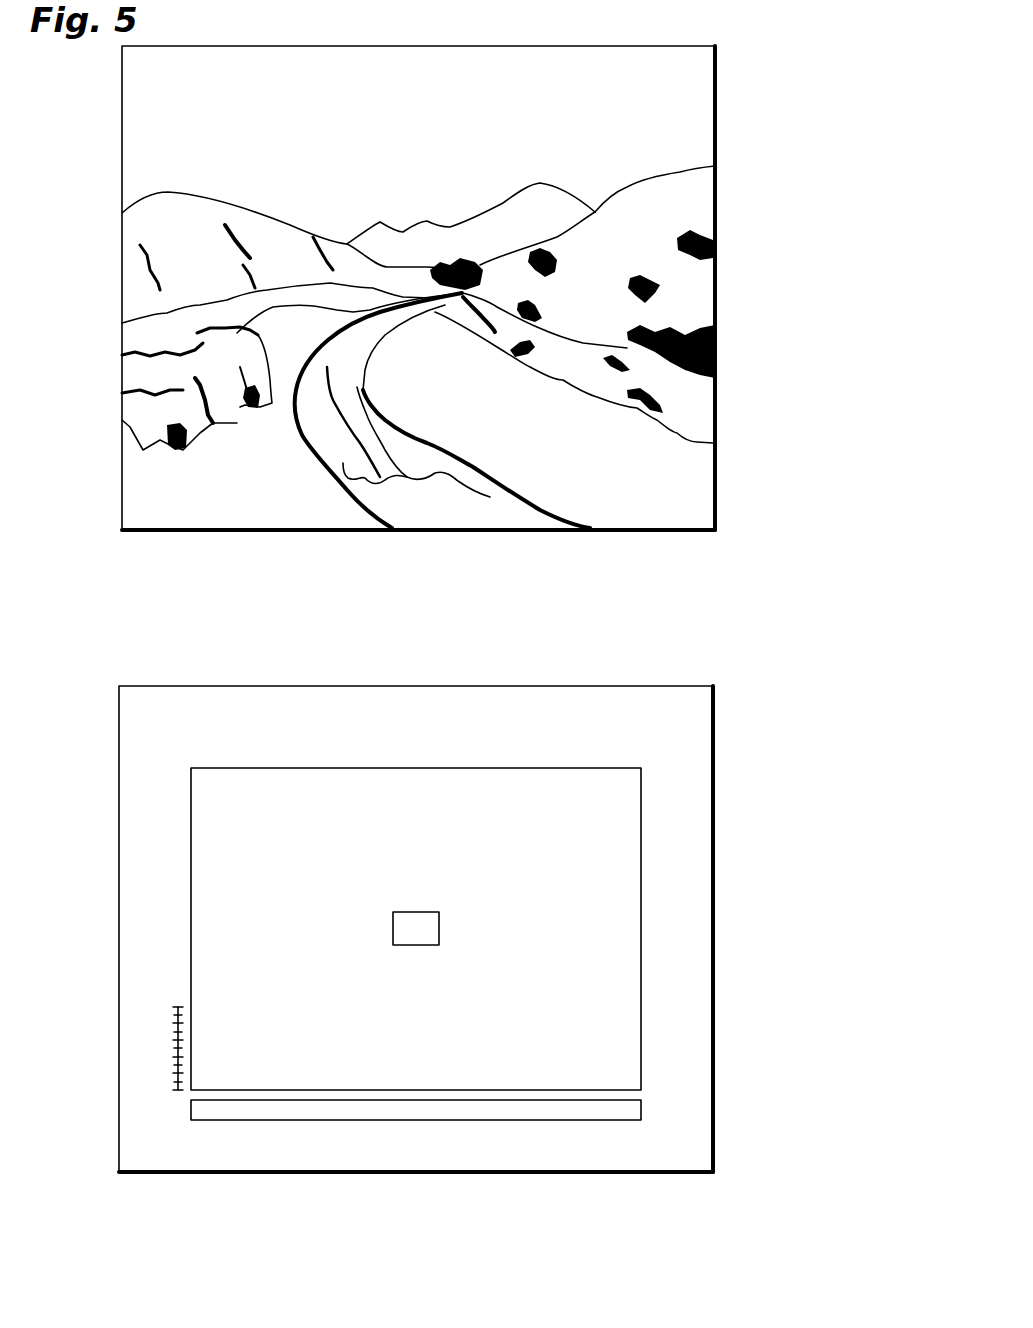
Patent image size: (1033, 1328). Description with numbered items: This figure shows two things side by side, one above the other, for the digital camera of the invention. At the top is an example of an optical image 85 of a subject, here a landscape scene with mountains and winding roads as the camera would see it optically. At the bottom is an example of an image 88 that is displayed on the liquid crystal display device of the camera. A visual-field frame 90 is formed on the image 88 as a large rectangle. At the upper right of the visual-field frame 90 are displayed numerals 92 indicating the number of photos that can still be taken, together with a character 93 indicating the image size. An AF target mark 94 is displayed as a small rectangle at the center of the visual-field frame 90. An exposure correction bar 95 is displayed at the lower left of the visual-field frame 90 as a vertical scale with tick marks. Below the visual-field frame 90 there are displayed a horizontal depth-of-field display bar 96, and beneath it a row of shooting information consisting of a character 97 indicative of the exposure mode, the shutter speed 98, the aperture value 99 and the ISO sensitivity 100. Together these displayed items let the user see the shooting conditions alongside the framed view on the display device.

The optical image 85 is at (717, 270).
The image 88 is at (715, 792).
The visual-field frame 90 is at (298, 767).
The numerals indicating the number of photos that can be taken 92 is at (508, 744).
The character indicating image size 93 is at (612, 743).
The AF target mark 94 is at (425, 910).
The exposure correction bar 95 is at (167, 1024).
The depth-of-field display bar 96 is at (651, 1091).
The character indicative of exposure mode 97 is at (178, 1155).
The shutter speed 98 is at (266, 1157).
The aperture value 99 is at (352, 1160).
The ISO sensitivity 100 is at (600, 1157).